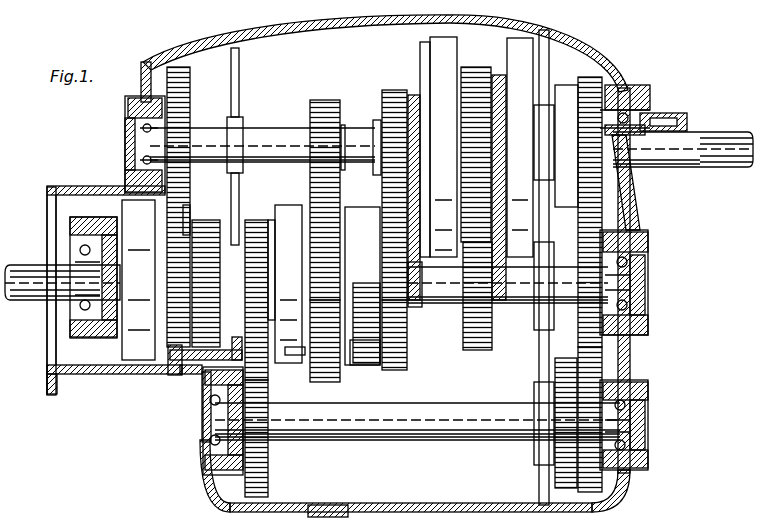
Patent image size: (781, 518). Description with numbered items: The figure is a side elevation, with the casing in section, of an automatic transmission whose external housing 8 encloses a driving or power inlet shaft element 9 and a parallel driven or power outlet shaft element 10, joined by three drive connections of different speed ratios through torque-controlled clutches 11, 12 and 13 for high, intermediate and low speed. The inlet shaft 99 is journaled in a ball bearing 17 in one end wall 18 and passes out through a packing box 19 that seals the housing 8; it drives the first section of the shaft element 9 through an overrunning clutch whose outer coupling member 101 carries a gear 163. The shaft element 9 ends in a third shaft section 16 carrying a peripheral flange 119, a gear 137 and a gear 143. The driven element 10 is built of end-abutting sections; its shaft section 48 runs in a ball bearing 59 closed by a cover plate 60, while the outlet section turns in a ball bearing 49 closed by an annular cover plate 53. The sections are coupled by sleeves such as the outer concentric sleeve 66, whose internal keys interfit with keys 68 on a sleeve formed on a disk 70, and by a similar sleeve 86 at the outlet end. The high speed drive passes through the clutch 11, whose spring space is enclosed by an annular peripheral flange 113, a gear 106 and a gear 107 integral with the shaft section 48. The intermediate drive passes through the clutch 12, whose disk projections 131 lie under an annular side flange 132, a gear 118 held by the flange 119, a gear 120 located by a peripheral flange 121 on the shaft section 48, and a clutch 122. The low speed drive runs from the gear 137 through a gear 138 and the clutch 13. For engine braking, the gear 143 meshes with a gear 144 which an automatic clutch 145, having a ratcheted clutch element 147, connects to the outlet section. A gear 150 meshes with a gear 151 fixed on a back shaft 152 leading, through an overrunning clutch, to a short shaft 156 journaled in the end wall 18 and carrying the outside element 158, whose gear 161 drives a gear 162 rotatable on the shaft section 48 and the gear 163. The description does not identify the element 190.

The external housing 8 is at (238, 48).
The driving or power inlet shaft element 9 is at (245, 117).
The driven or power outlet shaft element 10 is at (32, 300).
The high speed clutch 11 is at (497, 75).
The intermediate speed clutch 12 is at (413, 75).
The low speed clutch 13 is at (298, 356).
The third shaft section 16 is at (270, 132).
The ball bearing 17 is at (650, 110).
The end wall 18 is at (637, 82).
The packing box 19 is at (680, 113).
The shaft section 48 is at (511, 303).
The ball bearing 49 is at (52, 347).
The annular cover plate 53 is at (75, 322).
The ball bearing 59 is at (640, 258).
The cover plate 60 is at (640, 282).
The outer concentric sleeve 66 is at (367, 207).
The keys 68 is at (347, 180).
The disk 70 is at (272, 220).
The sleeve 86 is at (128, 374).
The inlet shaft 99 is at (703, 160).
The outer concentric coupling member 101 is at (566, 88).
The gear 106 is at (470, 67).
The gear 107 is at (489, 350).
The annular peripheral flange 113 is at (541, 30).
The gear 118 is at (390, 90).
The peripheral flange 119 is at (376, 120).
The gear 120 is at (400, 372).
The peripheral flange 121 is at (416, 305).
The clutch 122 is at (377, 364).
The lateral projections 131 is at (426, 92).
The annular side flange 132 is at (440, 37).
The gear 137 is at (322, 100).
The gear 138 is at (328, 383).
The gear 143 is at (183, 67).
The gear 144 is at (189, 364).
The automatic clutch 145 is at (163, 377).
The annular end face clutch element 147 is at (176, 218).
The gear 150 is at (258, 222).
The gear 151 is at (270, 481).
The back shaft 152 is at (406, 432).
The short shaft 156 is at (648, 417).
The outside element 158 is at (562, 358).
The gear 161 is at (624, 498).
The gear 162 is at (642, 302).
The gear 163 is at (592, 77).
The clutch drum 190 is at (300, 207).